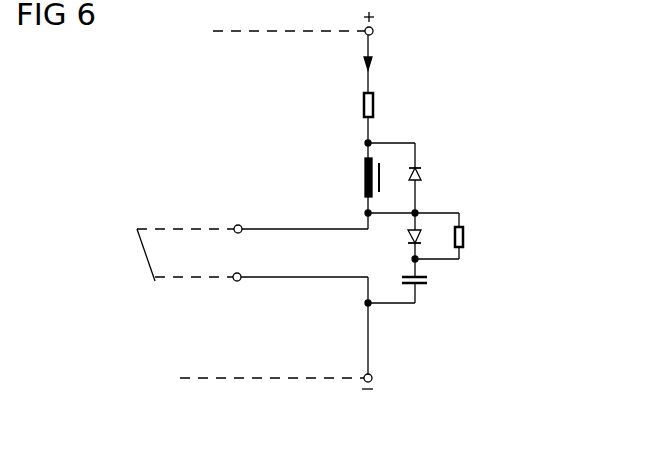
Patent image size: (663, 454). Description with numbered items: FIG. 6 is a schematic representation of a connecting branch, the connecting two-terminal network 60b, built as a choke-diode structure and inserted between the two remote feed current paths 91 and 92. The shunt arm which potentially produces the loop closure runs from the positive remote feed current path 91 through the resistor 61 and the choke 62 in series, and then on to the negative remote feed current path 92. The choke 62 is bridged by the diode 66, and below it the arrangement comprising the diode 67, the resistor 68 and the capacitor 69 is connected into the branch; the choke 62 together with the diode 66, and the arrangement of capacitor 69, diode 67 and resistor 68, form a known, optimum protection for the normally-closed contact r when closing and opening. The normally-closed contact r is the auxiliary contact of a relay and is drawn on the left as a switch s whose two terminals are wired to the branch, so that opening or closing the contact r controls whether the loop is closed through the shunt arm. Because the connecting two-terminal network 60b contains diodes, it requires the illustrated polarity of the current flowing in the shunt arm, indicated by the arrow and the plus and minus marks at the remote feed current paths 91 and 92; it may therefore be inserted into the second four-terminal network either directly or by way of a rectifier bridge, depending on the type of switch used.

The remote feed current path 91 is at (373, 31).
The remote feed current path 92 is at (372, 378).
The connecting two-terminal network 60b is at (501, 120).
The resistor 61 is at (380, 106).
The choke 62 is at (358, 177).
The diode 66 is at (426, 176).
The diode 67 is at (404, 238).
The resistor 68 is at (472, 236).
The capacitor 69 is at (426, 285).
The normally closed contact r is at (181, 255).
The switch s is at (300, 253).